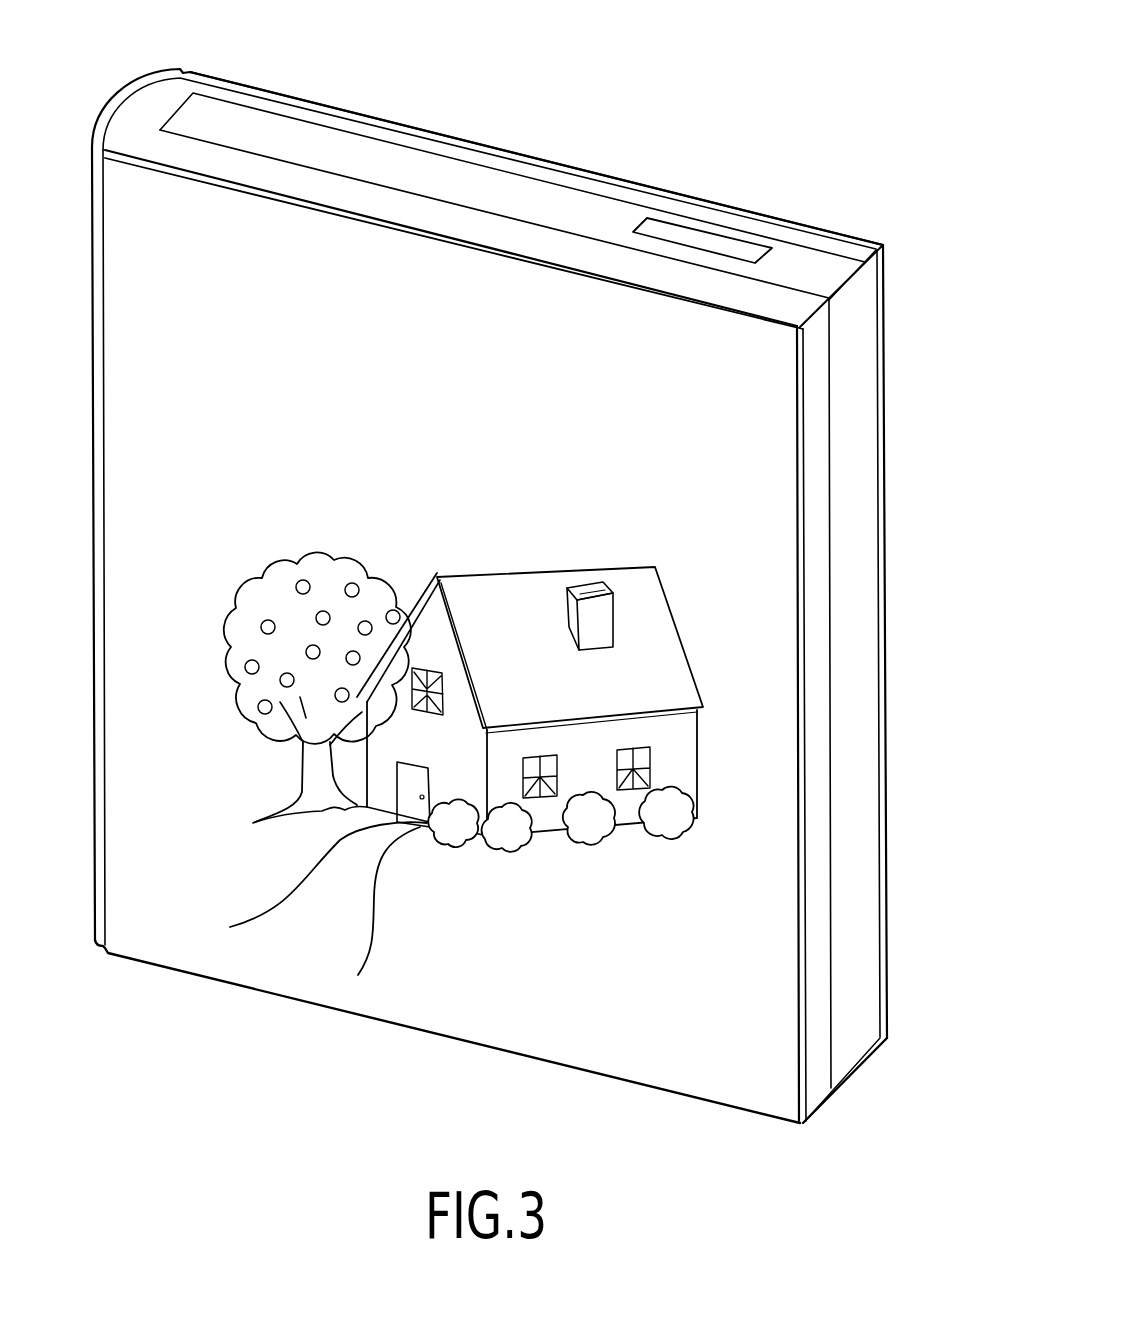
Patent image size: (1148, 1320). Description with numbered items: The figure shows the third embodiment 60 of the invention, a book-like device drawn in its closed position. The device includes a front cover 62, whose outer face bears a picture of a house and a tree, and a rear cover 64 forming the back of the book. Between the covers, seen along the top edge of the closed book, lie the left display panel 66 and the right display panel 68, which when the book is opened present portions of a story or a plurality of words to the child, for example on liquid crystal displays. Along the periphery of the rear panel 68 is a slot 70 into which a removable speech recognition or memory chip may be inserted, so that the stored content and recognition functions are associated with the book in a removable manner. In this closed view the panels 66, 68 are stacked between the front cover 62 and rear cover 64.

The third embodiment 60 is at (489, 561).
The front cover 62 is at (265, 378).
The rear cover 64 is at (583, 173).
The left display panel 66 is at (391, 206).
The right display panel 68 is at (467, 178).
The slot 70 is at (737, 240).